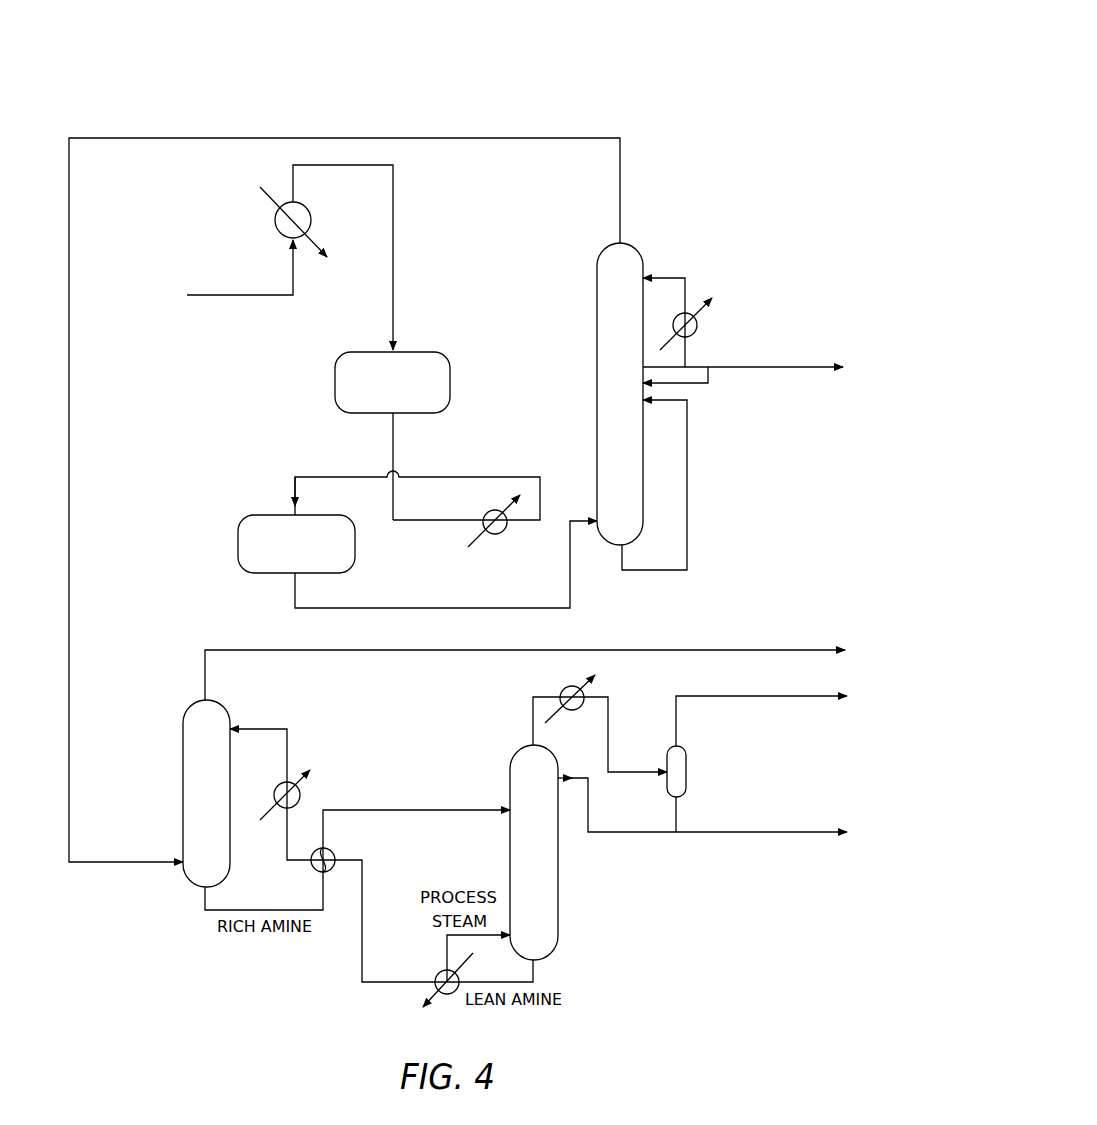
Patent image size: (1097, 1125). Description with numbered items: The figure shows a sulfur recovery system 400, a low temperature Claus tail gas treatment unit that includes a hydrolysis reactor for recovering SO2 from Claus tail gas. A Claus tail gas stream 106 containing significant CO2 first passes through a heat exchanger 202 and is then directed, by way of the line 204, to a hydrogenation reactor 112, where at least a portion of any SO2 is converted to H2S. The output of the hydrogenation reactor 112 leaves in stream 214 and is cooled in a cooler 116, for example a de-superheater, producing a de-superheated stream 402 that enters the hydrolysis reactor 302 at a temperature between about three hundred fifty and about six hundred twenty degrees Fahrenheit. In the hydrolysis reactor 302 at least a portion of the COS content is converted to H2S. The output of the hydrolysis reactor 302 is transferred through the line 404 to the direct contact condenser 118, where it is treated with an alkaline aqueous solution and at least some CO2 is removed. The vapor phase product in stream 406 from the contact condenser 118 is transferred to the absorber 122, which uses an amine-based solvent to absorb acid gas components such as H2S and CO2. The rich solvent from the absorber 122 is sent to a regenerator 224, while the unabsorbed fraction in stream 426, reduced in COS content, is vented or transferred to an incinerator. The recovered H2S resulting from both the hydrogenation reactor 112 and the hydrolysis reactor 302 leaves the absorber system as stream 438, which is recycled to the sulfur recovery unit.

The sulfur recovery system 400 is at (686, 31).
The heat exchanger 202 is at (272, 219).
The heated tail gas line to hydrogenation reactor 204 is at (395, 208).
The Claus tail gas stream 106 is at (296, 282).
The hydrogenation reactor 112 is at (316, 382).
The stream 214 is at (391, 444).
The cooler 116 is at (484, 513).
The de-superheated stream 402 is at (540, 489).
The hydrolysis reactor 302 is at (240, 544).
The hydrolysis reactor outlet line to contact condenser 404 is at (293, 597).
The contact condenser 118 is at (666, 421).
The stream 406 is at (620, 188).
The absorber 122 is at (247, 782).
The stream 426 is at (358, 652).
The regenerator 224 is at (678, 817).
The stream 438 is at (758, 696).